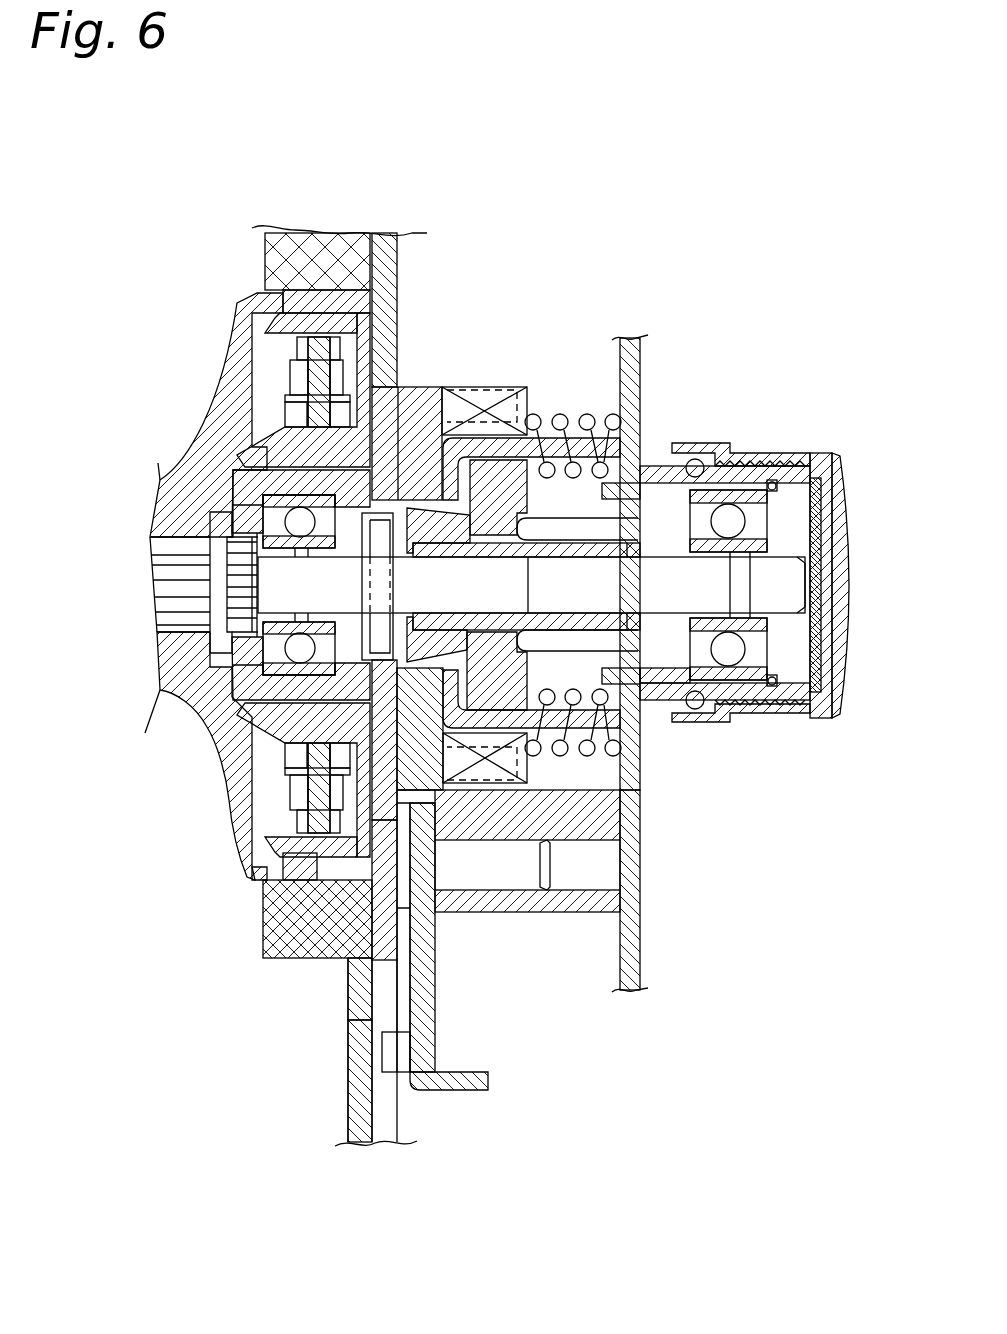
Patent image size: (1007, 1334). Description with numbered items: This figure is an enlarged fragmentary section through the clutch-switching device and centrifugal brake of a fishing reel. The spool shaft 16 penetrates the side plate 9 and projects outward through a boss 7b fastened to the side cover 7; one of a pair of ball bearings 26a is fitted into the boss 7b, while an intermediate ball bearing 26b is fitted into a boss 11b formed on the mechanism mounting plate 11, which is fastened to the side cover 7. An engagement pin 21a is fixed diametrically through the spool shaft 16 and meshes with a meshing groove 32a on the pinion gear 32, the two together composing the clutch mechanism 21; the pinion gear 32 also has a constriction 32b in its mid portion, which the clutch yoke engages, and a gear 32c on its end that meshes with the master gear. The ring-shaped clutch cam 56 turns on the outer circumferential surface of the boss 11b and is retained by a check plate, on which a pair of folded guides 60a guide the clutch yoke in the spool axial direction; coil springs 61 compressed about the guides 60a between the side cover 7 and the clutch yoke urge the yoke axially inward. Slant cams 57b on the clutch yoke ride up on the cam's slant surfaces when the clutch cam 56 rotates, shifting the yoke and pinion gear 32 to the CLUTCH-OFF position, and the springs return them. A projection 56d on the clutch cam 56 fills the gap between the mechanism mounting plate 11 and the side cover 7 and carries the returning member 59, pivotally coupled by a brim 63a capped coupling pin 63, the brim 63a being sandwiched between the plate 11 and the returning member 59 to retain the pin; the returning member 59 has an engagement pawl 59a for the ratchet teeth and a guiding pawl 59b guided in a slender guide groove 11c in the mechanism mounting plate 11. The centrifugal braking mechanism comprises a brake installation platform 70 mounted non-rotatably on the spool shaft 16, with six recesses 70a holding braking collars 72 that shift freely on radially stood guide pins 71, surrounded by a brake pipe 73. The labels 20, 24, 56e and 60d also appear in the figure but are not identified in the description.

The side cover 7 is at (647, 366).
The boss 7b is at (663, 470).
The side plate 9 is at (348, 1020).
The mechanism mounting plate 11 is at (385, 998).
The boss 11b is at (388, 873).
The guide groove 11c is at (385, 1137).
The spool shaft 16 is at (635, 546).
The shaft end 20 is at (793, 578).
The clutch mechanism 21 is at (431, 505).
The engagement pin 21a is at (370, 330).
The cover 24 is at (856, 542).
The ball bearing 26a is at (753, 670).
The intermediate ball bearing 26b is at (160, 482).
The pinion gear 32 is at (548, 660).
The meshing groove 32a is at (437, 897).
The constriction 32b is at (548, 790).
The gear 32c is at (576, 645).
The clutch cam 56 is at (513, 790).
The projection 56d is at (610, 817).
The housing wall 56e is at (620, 900).
The slant cam 57b is at (455, 386).
The returning member 59 is at (408, 1088).
The engagement pawl 59a is at (462, 1091).
The guiding pawl 59b is at (387, 1057).
The guide 60a is at (545, 445).
The armature plate 60d is at (600, 722).
The coil spring 61 is at (584, 417).
The coupling pin 63 is at (393, 647).
The brim 63a is at (400, 887).
The brake installation platform 70 is at (270, 747).
The recess 70a is at (297, 413).
The guide pin 71 is at (315, 760).
The braking collar 72 is at (290, 847).
The brake pipe 73 is at (272, 856).